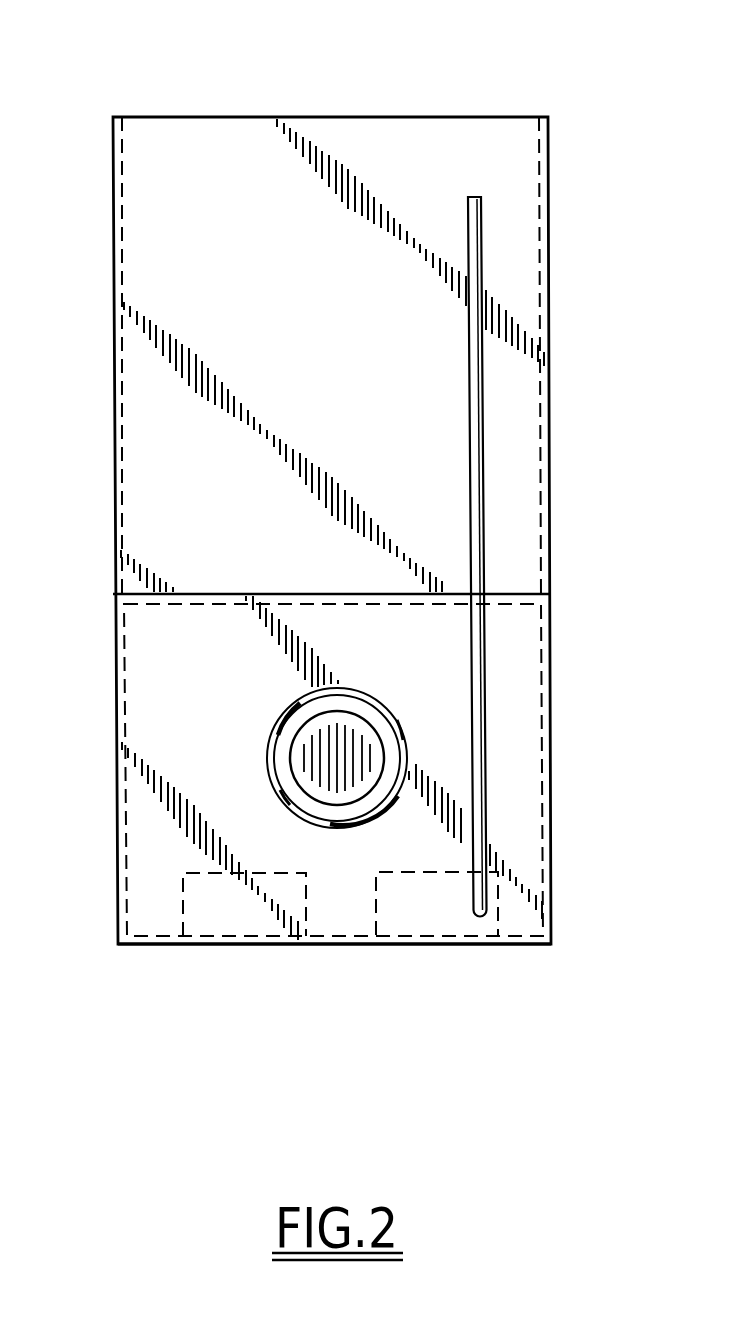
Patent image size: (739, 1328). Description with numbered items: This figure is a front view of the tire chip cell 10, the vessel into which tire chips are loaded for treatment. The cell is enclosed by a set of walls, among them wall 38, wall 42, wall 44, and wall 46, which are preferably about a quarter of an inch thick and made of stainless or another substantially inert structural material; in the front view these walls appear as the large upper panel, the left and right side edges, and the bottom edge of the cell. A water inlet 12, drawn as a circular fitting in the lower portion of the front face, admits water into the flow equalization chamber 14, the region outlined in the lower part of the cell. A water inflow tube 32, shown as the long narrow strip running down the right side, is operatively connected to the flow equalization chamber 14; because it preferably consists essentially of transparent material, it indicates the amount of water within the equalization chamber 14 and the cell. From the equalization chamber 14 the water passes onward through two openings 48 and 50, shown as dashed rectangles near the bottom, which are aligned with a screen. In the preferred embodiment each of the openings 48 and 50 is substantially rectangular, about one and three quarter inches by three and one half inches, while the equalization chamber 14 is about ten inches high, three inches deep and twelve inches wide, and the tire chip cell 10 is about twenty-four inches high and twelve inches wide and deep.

The tire chip cell 10 is at (368, 84).
The water inlet 12 is at (366, 713).
The flow equalization chamber 14 is at (145, 825).
The water inflow tube 32 is at (484, 412).
The wall 38 is at (240, 152).
The wall 42 is at (113, 212).
The wall 44 is at (341, 946).
The wall 46 is at (551, 548).
The opening 48 is at (242, 917).
The opening 50 is at (427, 912).